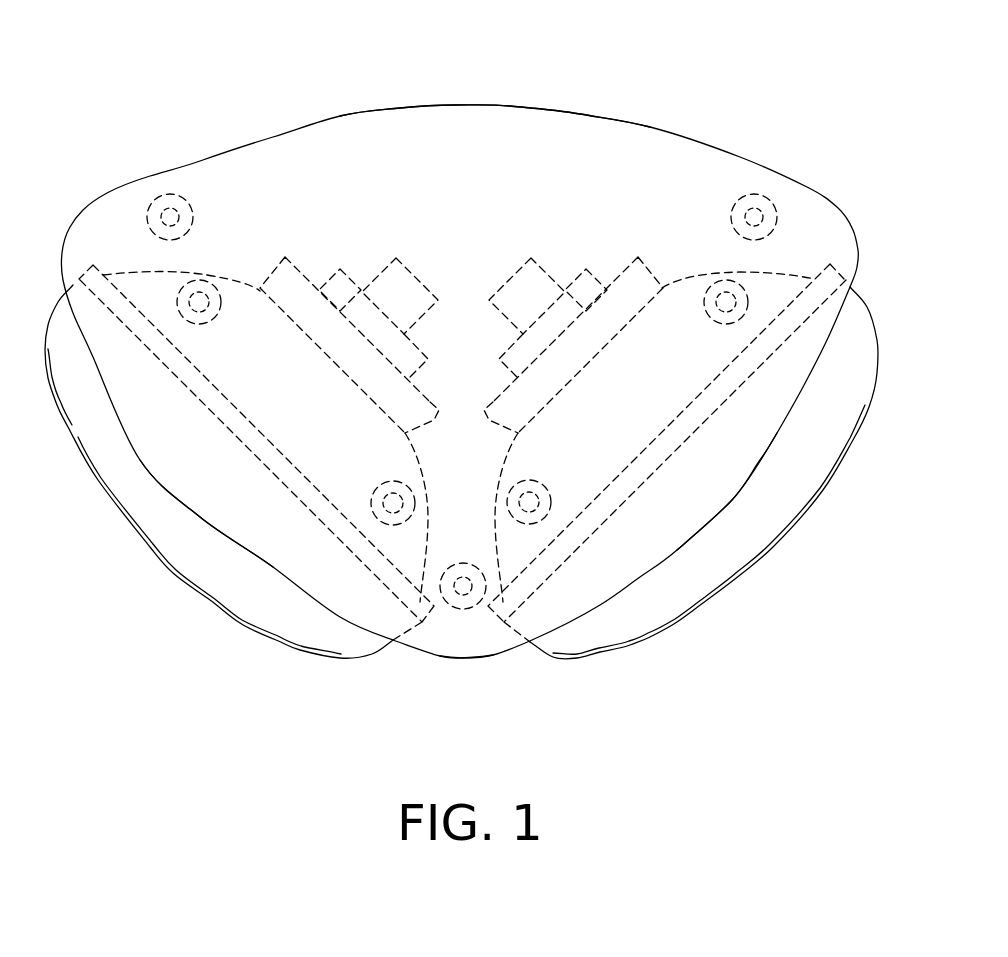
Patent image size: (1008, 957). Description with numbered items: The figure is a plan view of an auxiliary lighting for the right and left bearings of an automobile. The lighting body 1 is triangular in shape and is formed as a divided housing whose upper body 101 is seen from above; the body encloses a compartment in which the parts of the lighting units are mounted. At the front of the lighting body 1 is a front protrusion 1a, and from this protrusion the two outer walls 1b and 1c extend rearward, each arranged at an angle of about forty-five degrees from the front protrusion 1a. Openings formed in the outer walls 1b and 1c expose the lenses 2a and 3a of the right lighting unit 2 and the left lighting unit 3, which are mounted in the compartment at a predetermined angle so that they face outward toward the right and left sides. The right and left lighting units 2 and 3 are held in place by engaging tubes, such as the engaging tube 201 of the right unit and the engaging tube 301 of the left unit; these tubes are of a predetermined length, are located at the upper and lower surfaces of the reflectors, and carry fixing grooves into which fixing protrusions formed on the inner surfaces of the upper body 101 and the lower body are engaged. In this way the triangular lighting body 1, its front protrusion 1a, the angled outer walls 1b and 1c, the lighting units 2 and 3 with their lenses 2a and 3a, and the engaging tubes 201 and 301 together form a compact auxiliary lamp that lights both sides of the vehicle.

The lighting body 1 is at (538, 103).
The upper body 101 is at (643, 147).
The front protrusion 1a is at (465, 672).
The outer wall 1b is at (740, 506).
The outer wall 1c is at (195, 528).
The right lighting unit 2 is at (683, 293).
The engaging tube 201 is at (752, 292).
The lens 2a is at (808, 465).
The left lighting unit 3 is at (128, 277).
The engaging tube 301 is at (207, 277).
The lens 3a is at (253, 603).